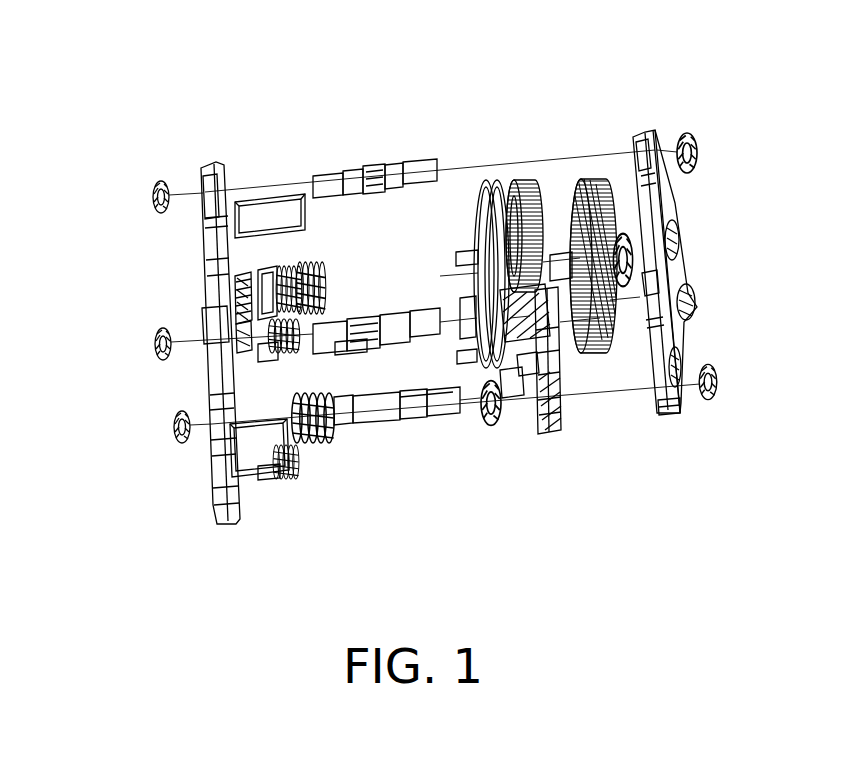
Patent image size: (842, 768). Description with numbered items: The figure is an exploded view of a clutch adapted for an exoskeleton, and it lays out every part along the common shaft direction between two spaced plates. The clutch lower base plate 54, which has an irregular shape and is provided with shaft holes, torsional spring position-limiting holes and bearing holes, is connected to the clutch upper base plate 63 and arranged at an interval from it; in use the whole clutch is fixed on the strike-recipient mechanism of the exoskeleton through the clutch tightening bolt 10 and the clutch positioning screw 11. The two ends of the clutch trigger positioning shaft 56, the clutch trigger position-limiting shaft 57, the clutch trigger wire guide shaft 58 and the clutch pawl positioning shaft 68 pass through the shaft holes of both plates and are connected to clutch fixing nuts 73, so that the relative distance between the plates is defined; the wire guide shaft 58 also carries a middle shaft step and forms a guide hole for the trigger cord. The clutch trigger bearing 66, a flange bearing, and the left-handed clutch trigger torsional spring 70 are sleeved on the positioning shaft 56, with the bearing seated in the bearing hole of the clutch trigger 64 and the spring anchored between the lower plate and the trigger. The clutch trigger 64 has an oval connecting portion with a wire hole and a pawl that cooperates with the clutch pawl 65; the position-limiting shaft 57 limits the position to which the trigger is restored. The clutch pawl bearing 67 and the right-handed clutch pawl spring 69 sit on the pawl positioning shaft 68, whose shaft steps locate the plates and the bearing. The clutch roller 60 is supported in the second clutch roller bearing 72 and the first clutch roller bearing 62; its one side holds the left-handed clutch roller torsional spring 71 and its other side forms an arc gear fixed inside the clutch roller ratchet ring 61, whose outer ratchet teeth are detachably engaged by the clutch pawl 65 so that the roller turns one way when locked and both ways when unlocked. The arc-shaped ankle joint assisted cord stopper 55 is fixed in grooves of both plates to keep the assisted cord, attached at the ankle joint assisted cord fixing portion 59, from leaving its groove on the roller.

The clutch tightening bolt 10 is at (256, 440).
The clutch positioning screw 11 is at (280, 460).
The clutch lower base plate 54 is at (202, 163).
The ankle joint assisted cord stopper 55 is at (280, 220).
The clutch trigger positioning shaft 56 is at (363, 318).
The clutch trigger position-limiting shaft 57 is at (428, 343).
The clutch trigger wire guide shaft 58 is at (408, 172).
The ankle joint assisted cord fixing portion 59 is at (471, 250).
The clutch roller 60 is at (524, 180).
The clutch roller ratchet ring 61 is at (584, 177).
The first clutch roller bearing 62 is at (632, 253).
The clutch upper base plate 63 is at (660, 380).
The clutch trigger 64 is at (591, 393).
The clutch pawl 65 is at (552, 362).
The clutch trigger bearing 66 is at (512, 370).
The clutch pawl bearing 67 is at (490, 372).
The clutch pawl positioning shaft 68 is at (384, 414).
The clutch pawl spring 69 is at (324, 436).
The clutch trigger torsional spring 70 is at (275, 367).
The clutch roller torsional spring 71 is at (278, 312).
The second clutch roller bearing 72 is at (245, 278).
The clutch fixing nut 73 is at (150, 187).